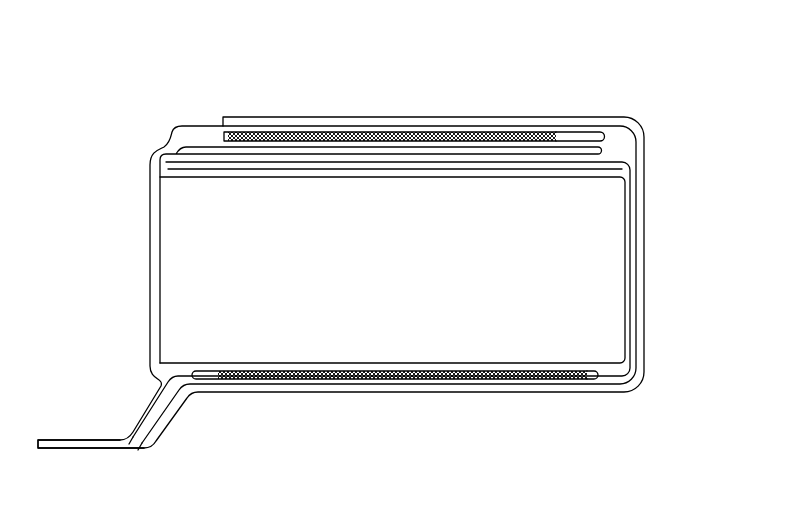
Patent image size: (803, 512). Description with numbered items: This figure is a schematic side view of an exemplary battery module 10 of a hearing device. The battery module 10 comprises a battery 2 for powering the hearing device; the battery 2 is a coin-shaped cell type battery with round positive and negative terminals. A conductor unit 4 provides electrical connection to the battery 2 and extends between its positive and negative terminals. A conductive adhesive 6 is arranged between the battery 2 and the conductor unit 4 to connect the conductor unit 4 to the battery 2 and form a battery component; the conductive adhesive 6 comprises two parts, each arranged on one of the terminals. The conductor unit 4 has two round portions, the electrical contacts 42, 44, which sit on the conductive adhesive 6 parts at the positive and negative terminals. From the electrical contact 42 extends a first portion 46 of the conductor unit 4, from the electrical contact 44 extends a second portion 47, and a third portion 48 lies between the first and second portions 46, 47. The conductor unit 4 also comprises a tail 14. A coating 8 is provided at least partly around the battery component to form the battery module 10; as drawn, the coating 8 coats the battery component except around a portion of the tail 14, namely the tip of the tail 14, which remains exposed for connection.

The battery module 10 is at (166, 97).
The battery 2 is at (170, 248).
The conductor unit 4 is at (633, 318).
The third portion 48 is at (636, 210).
The coating 8 is at (533, 392).
The conductive adhesive 6 is at (567, 133).
The electrical contact 44 is at (401, 131).
The second portion 47 is at (593, 126).
The electrical contact 42 is at (303, 382).
The first portion 46 is at (593, 382).
The tail 14 is at (140, 452).